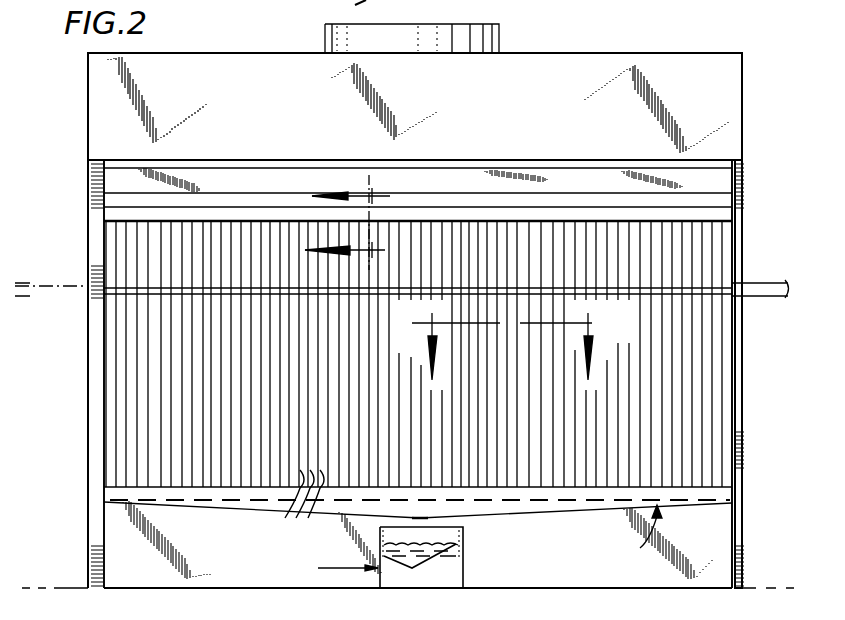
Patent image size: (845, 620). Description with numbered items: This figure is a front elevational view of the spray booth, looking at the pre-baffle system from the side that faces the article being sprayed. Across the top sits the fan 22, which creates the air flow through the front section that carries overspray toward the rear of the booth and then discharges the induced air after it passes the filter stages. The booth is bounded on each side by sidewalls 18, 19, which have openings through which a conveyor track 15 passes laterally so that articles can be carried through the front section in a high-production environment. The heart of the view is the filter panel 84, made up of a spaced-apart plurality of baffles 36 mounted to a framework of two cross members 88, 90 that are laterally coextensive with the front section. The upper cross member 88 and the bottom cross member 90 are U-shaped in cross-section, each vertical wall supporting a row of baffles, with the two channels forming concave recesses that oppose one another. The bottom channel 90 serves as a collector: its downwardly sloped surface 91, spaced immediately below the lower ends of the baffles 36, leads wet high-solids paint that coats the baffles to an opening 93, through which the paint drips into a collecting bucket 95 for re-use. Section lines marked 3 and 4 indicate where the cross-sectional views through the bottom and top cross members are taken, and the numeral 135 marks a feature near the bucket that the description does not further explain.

The fan 22 is at (499, 46).
The cross member 88 is at (230, 213).
The section line 4- 4 is at (357, 222).
The section line 3- 3 is at (504, 346).
The conveyor track 15 is at (30, 296).
The sidewall 18 is at (95, 538).
The sidewall 19 is at (745, 550).
The bottom cross member 90 is at (210, 492).
The downwardly sloped surface 91 is at (536, 512).
The baffles 36 is at (303, 510).
The opening 93 is at (422, 514).
The collecting bucket 95 is at (458, 572).
The liquid inlet 135 is at (322, 569).
The filter panel 84 is at (630, 535).